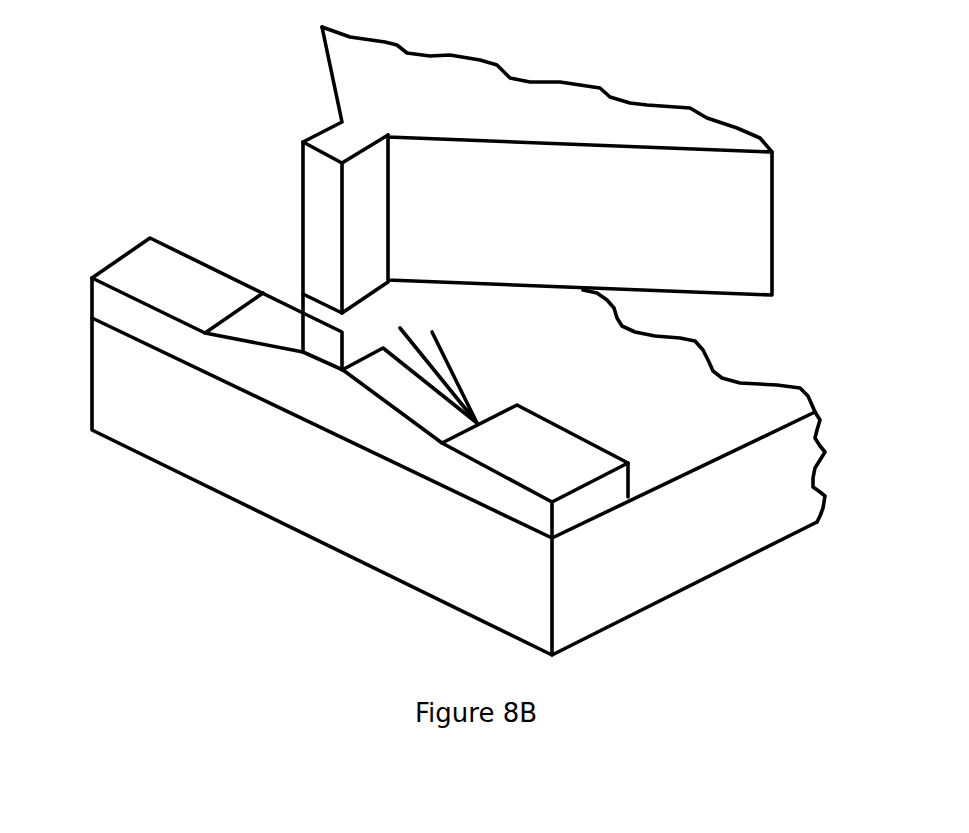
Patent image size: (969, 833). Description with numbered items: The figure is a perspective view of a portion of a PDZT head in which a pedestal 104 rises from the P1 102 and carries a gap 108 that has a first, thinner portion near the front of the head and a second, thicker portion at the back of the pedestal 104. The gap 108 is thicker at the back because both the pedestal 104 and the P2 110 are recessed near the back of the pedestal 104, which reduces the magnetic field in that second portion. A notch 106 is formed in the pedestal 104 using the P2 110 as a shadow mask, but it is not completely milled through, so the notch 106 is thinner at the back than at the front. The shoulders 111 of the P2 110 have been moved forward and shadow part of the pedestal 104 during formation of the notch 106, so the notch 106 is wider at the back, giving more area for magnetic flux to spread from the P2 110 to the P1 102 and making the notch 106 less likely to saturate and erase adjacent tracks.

The P1 102 is at (270, 619).
The pedestal 104 is at (535, 391).
The notch 106 is at (370, 339).
The gap 108 is at (281, 305).
The P2 110 is at (315, 82).
The shoulders 111 is at (388, 135).